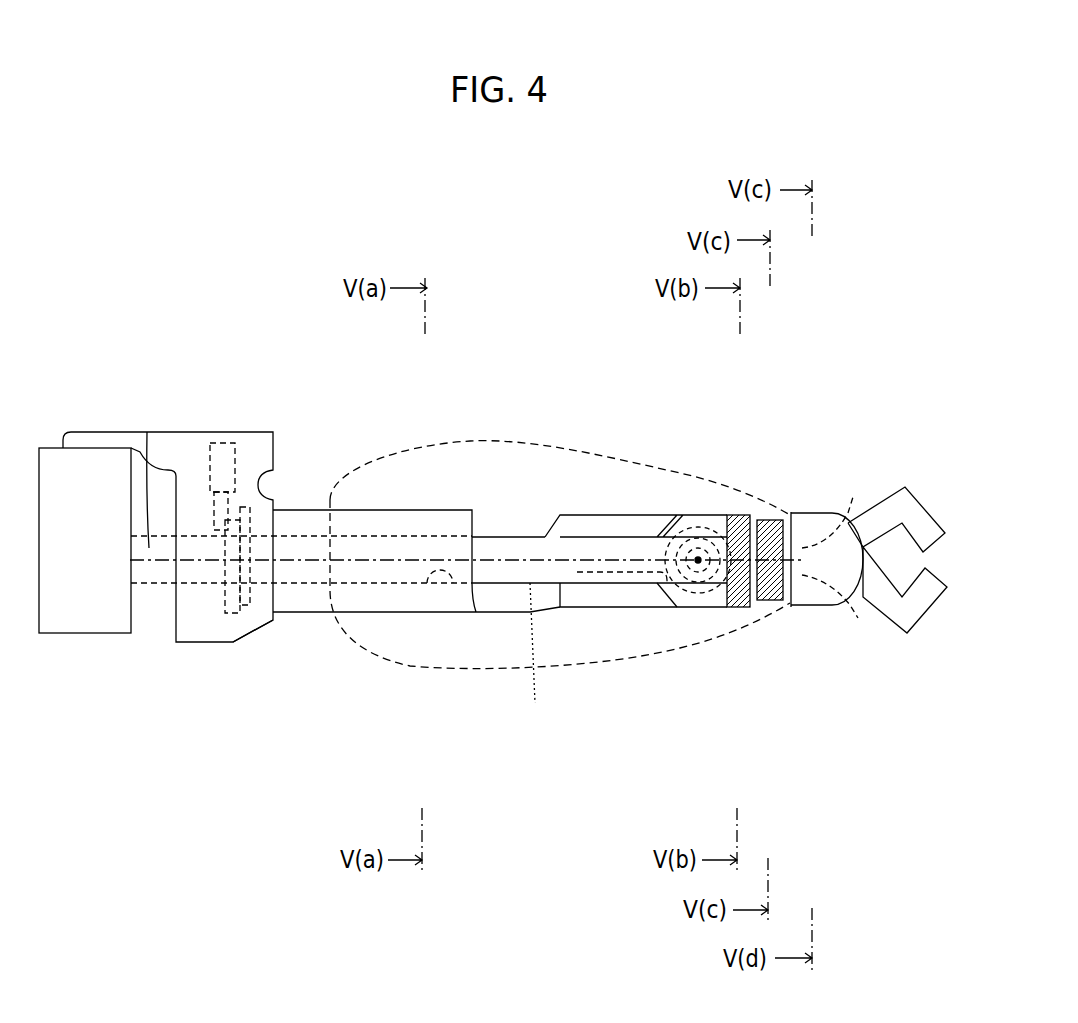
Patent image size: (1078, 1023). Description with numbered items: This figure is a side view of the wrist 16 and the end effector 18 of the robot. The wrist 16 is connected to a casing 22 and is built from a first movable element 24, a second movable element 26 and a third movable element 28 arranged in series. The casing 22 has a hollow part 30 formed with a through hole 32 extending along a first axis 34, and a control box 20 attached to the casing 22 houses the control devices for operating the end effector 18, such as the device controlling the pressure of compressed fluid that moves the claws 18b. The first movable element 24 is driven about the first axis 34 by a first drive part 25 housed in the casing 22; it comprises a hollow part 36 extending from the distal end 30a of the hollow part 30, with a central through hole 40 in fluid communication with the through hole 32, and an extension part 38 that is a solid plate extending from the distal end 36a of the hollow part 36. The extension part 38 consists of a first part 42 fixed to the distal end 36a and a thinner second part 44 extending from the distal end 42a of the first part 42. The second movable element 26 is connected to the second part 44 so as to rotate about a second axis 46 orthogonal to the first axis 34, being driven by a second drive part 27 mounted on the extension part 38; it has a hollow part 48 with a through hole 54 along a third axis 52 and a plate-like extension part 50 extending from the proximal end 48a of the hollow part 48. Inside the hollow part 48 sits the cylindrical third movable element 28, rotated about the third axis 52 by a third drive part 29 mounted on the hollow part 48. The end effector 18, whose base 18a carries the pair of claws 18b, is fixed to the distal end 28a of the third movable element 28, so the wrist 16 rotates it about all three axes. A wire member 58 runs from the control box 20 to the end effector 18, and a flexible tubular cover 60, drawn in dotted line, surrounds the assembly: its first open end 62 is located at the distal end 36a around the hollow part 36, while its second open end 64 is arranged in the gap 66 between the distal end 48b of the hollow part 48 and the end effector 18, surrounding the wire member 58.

The wrist 16 is at (535, 340).
The end effector 18 is at (912, 645).
The base 18a is at (865, 600).
The claws 18b is at (930, 518).
The control box 20 is at (80, 615).
The casing 22 is at (196, 422).
The first movable element 24 is at (405, 624).
The first drive part 25 is at (220, 443).
The second movable element 26 is at (697, 622).
The second drive part 27 is at (607, 583).
The third movable element 28 is at (808, 515).
The distal end of third movable element 28a is at (808, 603).
The third drive part 29 is at (742, 607).
The hollow part 30 is at (208, 632).
The distal end of hollow part 30a is at (276, 618).
The through hole 32 is at (163, 585).
The first axis 34 is at (360, 560).
The hollow part 36 is at (363, 527).
The distal end of hollow part 36a is at (490, 612).
The extension part 38 is at (591, 503).
The through hole 40 is at (440, 587).
The first part 42 is at (513, 530).
The distal end of first part 42a is at (573, 515).
The second part 44 is at (633, 520).
The second axis 46 is at (698, 560).
The hollow part 48 is at (738, 515).
The proximal end of hollow part 48a is at (718, 525).
The distal end of hollow part 48b is at (775, 607).
The extension part 50 is at (707, 525).
The third axis 52 is at (830, 560).
The through hole 54 is at (763, 520).
The wire member 58 is at (147, 432).
The cover 60 is at (406, 450).
The first open end 62 is at (330, 500).
The second open end 64 is at (850, 518).
The gap 66 is at (790, 525).